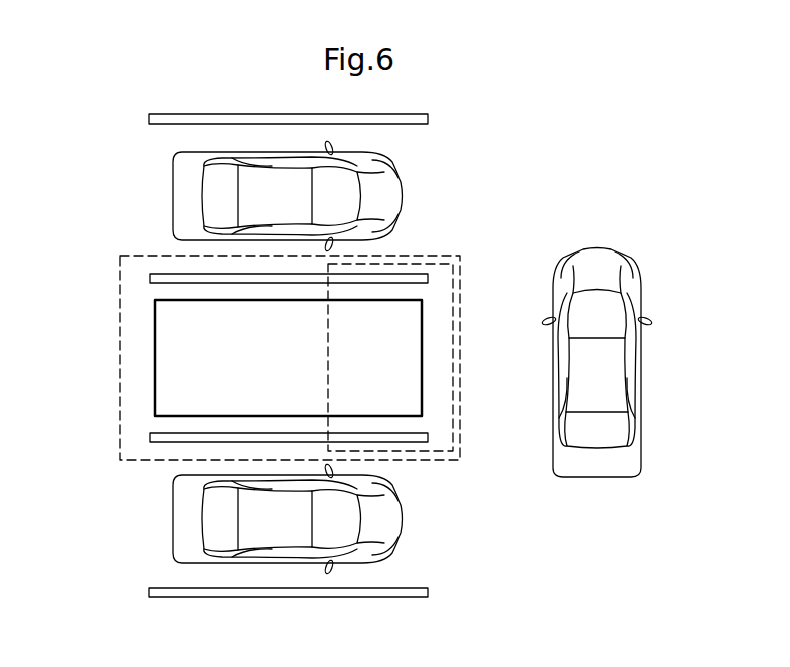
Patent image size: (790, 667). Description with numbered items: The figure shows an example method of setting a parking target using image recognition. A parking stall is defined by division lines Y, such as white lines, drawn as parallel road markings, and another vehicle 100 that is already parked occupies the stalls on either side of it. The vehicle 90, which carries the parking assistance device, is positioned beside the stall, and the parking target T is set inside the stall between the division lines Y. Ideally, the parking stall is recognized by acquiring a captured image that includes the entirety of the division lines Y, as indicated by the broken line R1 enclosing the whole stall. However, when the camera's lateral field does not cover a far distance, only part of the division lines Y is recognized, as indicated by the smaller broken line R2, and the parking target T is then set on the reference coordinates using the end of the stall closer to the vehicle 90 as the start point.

The another vehicle 100 is at (172, 197).
The vehicle 90 is at (638, 392).
The division lines Y is at (398, 125).
The parking target T is at (155, 367).
The broken line R1 is at (120, 293).
The broken line R2 is at (453, 372).